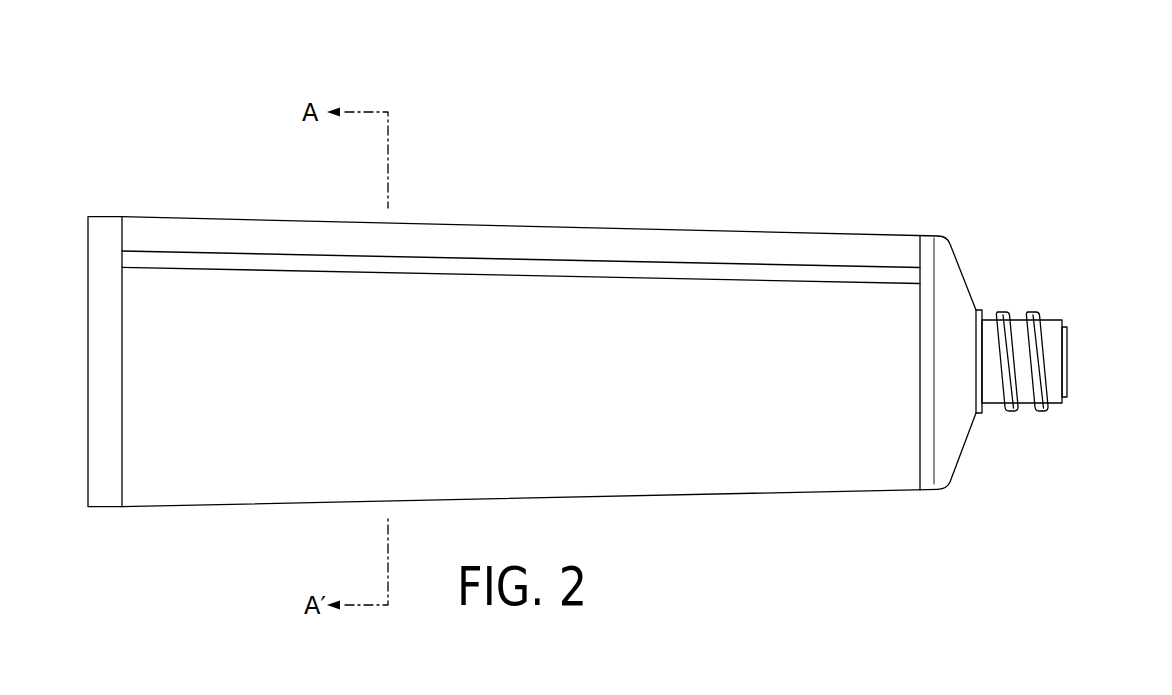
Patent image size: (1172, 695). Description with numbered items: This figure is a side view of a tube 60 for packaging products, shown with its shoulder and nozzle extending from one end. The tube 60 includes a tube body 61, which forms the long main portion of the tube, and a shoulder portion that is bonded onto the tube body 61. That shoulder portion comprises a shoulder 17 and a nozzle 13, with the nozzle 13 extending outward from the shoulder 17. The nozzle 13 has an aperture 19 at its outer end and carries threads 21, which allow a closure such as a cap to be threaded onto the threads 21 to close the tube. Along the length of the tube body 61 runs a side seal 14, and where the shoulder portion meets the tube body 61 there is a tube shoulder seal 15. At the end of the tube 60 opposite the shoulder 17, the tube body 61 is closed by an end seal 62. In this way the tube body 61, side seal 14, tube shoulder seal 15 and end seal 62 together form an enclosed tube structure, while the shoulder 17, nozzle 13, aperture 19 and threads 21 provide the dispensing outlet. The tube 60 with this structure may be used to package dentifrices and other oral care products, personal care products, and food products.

The nozzle 13 is at (993, 403).
The side seal 14 is at (703, 272).
The tube shoulder seal 15 is at (927, 433).
The shoulder 17 is at (955, 260).
The aperture 19 is at (1067, 353).
The threads 21 is at (1037, 317).
The tube 60 is at (583, 372).
The tube body 61 is at (452, 250).
The end seal 62 is at (103, 217).